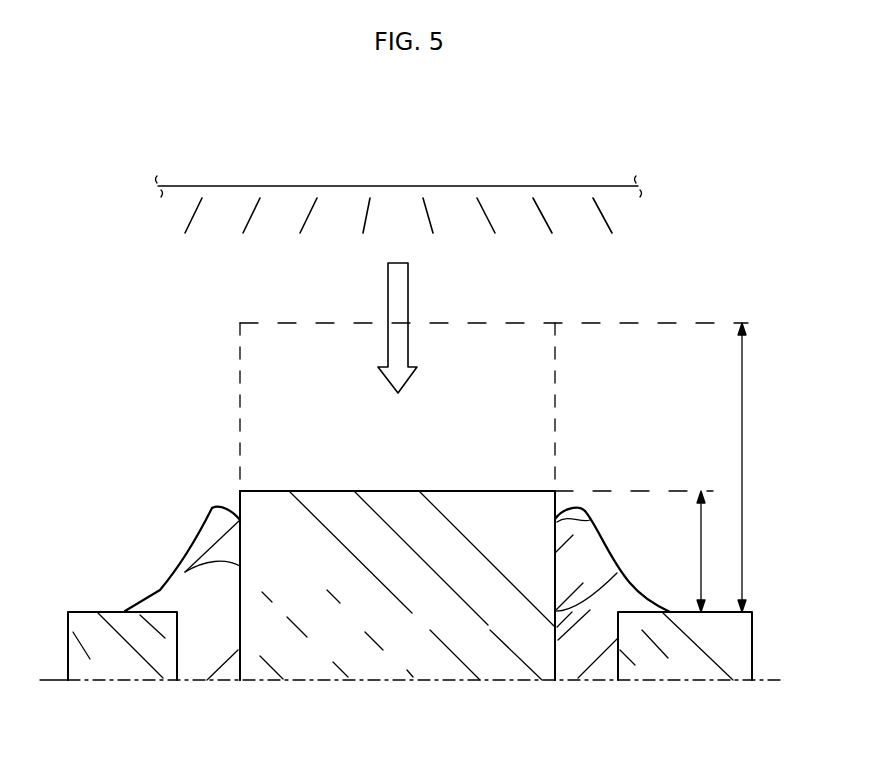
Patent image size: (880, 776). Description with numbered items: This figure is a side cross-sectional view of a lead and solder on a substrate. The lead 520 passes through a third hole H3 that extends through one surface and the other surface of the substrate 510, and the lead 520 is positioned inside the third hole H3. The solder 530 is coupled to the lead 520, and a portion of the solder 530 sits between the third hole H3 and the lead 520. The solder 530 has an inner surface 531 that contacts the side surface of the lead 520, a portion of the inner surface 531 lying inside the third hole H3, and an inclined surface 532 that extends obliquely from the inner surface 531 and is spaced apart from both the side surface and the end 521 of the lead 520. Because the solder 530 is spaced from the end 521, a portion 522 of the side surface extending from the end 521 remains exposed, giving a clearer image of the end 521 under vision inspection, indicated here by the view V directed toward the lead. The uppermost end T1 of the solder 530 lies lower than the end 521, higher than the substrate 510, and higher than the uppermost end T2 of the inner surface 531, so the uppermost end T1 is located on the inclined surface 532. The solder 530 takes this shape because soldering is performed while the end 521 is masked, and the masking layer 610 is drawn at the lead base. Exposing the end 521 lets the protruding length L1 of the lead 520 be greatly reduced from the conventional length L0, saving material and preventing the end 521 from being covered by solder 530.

The substrate 510 is at (124, 669).
The lead 520 is at (390, 648).
The end of the lead 521 is at (333, 491).
The portion of a side surface 522 is at (239, 500).
The solder 530 is at (200, 669).
The inner surface 531 is at (163, 585).
The inclined surface 532 is at (208, 512).
The adhesive layer 610 is at (233, 658).
The light source V is at (605, 186).
The uppermost end of the solder T1 is at (212, 508).
The uppermost end of the inner surface T2 is at (215, 530).
The third hole H3 is at (620, 660).
The conventional length L0 is at (755, 467).
The length of the lead protruding from the substrate L1 is at (714, 551).